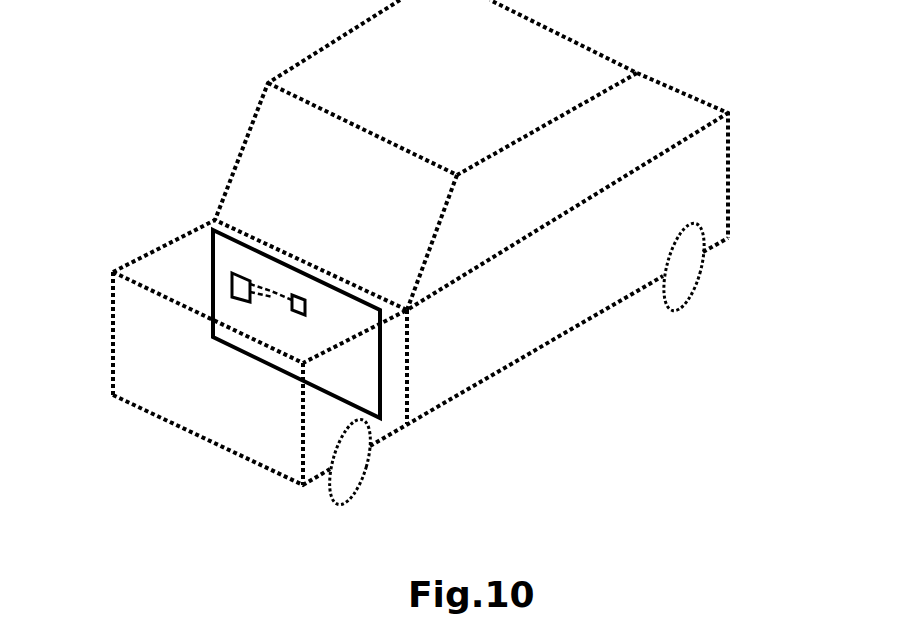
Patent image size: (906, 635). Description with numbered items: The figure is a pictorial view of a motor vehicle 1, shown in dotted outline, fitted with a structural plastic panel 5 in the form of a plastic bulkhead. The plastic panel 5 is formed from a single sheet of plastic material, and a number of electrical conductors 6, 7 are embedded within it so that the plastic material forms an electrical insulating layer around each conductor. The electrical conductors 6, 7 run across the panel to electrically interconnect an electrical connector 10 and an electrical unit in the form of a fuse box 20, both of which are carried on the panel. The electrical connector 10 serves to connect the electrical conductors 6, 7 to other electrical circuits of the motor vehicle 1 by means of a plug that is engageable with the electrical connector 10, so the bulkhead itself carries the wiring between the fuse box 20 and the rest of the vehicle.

The motor vehicle 1 is at (622, 317).
The structural plastic panel 5 is at (390, 408).
The electrical conductor 6 is at (272, 297).
The electrical conductor 7 is at (270, 293).
The electrical connector 10 is at (292, 305).
The fuse box 20 is at (232, 277).